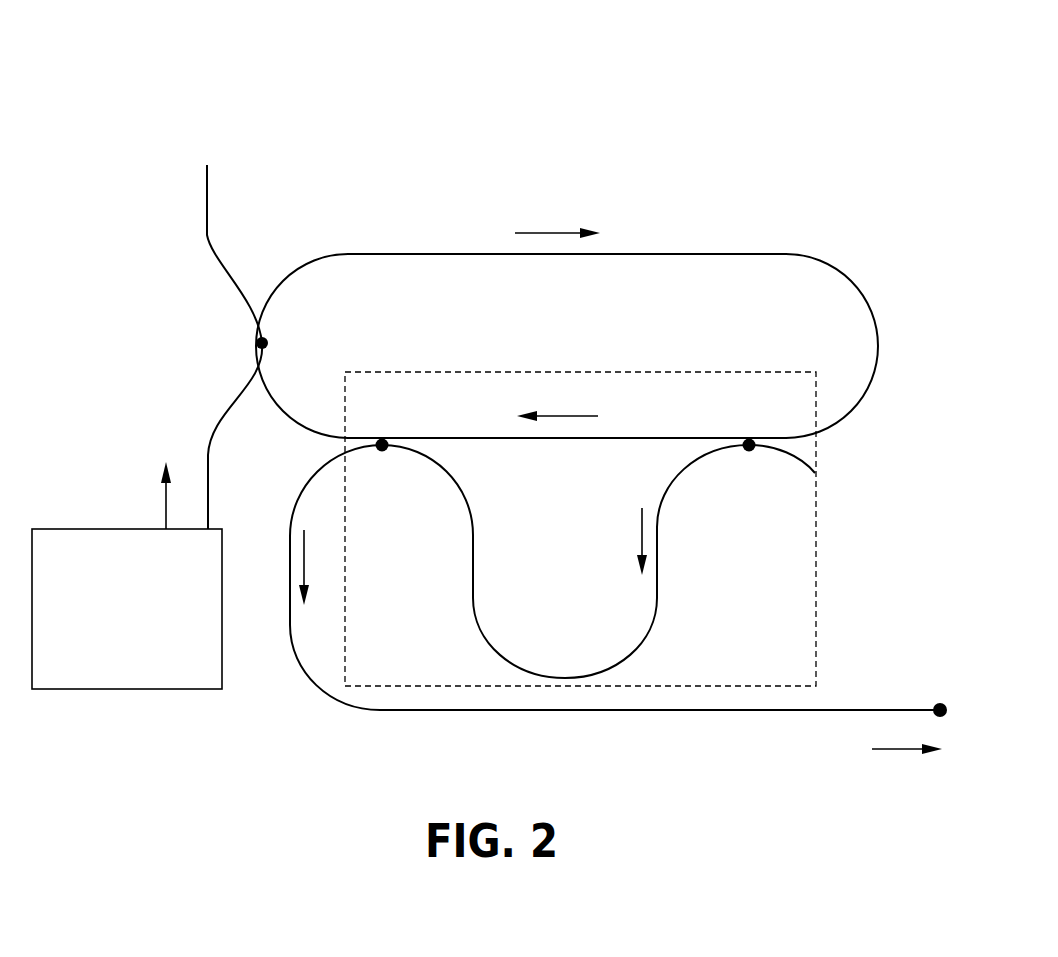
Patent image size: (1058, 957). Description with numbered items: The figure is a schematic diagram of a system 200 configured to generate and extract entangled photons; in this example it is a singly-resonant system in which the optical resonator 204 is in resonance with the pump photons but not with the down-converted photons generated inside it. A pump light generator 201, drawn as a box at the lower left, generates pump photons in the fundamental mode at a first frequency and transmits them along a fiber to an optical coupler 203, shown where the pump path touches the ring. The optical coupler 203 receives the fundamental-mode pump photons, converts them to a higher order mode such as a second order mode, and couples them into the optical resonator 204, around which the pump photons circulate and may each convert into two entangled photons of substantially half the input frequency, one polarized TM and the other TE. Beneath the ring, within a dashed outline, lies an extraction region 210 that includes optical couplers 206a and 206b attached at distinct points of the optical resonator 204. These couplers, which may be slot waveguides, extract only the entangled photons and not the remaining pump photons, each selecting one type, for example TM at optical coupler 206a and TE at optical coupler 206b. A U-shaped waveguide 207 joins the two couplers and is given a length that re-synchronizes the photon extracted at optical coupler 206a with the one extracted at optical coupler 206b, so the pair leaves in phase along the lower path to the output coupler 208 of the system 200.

The system 200 is at (78, 127).
The pump light generator 201 is at (143, 648).
The optical coupler 203 is at (255, 346).
The optical resonator 204 is at (553, 339).
The optical coupler 206a is at (748, 437).
The optical coupler 206b is at (384, 437).
The waveguide 207 is at (600, 670).
The output coupler 208 is at (940, 701).
The extraction region 210 is at (455, 686).